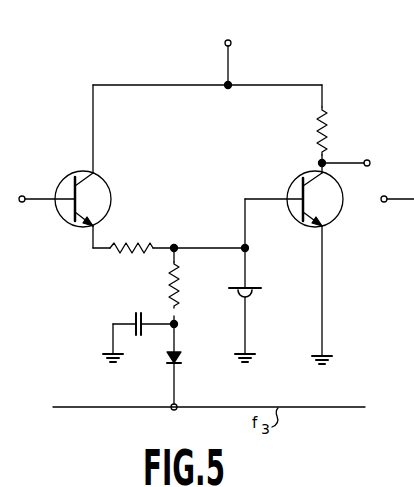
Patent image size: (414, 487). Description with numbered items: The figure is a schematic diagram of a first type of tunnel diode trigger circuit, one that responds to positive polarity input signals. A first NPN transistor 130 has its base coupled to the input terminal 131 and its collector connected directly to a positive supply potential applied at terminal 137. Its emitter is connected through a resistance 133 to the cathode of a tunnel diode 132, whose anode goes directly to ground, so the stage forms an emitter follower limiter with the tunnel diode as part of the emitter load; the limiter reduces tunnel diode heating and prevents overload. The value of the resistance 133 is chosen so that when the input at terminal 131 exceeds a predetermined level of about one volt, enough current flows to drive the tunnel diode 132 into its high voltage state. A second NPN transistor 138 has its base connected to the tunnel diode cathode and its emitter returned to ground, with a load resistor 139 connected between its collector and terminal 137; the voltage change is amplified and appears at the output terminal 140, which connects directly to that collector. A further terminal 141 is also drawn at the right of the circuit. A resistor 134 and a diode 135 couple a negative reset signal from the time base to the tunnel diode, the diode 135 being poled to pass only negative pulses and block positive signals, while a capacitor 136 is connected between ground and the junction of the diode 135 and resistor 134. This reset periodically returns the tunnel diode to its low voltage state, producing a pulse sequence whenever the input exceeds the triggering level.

The first NPN transistor 130 is at (111, 192).
The input terminal 131 is at (25, 196).
The tunnel diode 132 is at (250, 288).
The resistance 133 is at (124, 246).
The resistor 134 is at (177, 284).
The diode 135 is at (181, 362).
The capacitor 136 is at (133, 313).
The terminal 137 is at (232, 47).
The second NPN transistor 138 is at (328, 223).
The load resistor 139 is at (327, 130).
The output terminal 140 is at (369, 161).
The output terminal 141 is at (384, 203).